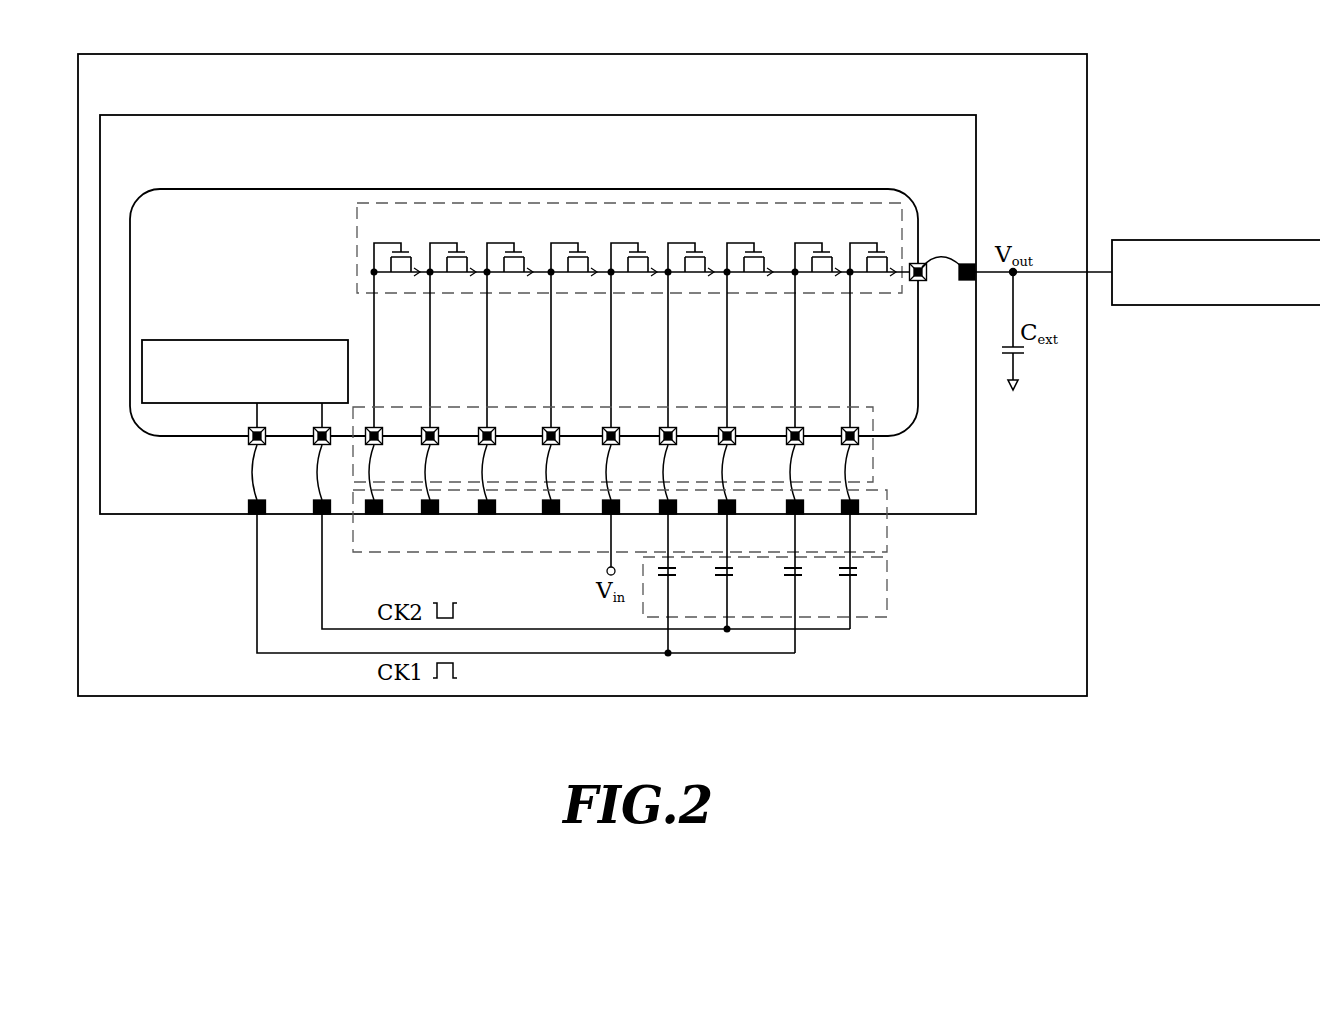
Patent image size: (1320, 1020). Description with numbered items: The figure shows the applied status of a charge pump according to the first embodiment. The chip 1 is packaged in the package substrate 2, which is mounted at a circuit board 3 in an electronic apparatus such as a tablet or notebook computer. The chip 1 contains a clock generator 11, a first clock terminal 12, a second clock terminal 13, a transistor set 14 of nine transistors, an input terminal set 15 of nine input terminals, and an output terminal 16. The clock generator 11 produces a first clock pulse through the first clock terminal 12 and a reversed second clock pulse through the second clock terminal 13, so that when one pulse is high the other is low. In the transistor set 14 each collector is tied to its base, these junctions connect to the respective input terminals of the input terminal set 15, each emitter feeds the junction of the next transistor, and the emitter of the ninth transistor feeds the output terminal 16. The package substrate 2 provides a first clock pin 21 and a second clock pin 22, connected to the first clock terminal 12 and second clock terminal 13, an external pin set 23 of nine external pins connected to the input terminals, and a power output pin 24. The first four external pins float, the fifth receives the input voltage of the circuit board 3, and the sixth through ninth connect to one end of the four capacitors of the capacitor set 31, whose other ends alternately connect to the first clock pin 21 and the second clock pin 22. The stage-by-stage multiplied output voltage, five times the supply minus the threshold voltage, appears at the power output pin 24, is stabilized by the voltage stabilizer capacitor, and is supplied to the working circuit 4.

The chip 1 is at (263, 189).
The package substrate 2 is at (492, 115).
The circuit board 3 is at (668, 54).
The working circuit 4 is at (1218, 240).
The clock generator 11 is at (243, 340).
The first clock terminal 12 is at (250, 442).
The second clock terminal 13 is at (316, 442).
The transistor set 14 is at (738, 203).
The input terminal set 15 is at (875, 452).
The output terminal 16 is at (925, 279).
The first clock pin 21 is at (250, 513).
The second clock pin 22 is at (316, 513).
The external pin set 23 is at (887, 540).
The power output pin 24 is at (968, 262).
The capacitor set 31 is at (887, 590).